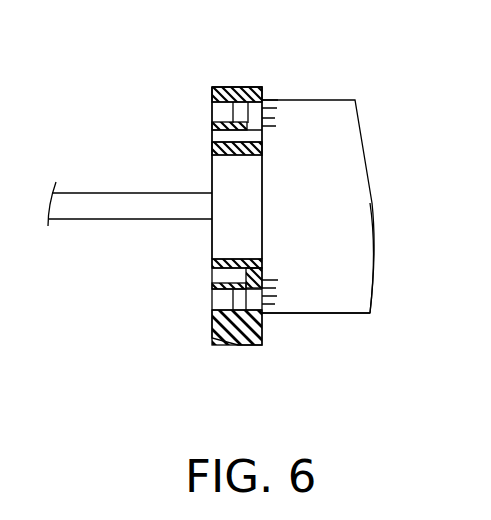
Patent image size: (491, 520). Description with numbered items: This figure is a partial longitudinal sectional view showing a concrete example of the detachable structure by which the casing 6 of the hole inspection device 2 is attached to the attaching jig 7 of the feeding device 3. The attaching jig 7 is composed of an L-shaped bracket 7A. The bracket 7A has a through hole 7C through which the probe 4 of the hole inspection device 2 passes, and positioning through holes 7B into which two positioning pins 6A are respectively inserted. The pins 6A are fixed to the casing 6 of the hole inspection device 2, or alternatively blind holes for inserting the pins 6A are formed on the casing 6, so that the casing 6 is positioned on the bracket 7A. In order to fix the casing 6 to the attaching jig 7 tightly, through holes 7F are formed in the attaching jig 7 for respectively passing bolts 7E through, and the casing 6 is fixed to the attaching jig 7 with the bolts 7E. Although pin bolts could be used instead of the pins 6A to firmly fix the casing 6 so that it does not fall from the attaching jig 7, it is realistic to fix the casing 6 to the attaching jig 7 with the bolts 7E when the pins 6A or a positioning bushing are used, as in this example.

The hole inspection device 2 is at (331, 101).
The feeding device 3 is at (239, 89).
The probe 4 is at (103, 206).
The casing 6 is at (349, 300).
The positioning pins 6A is at (212, 140).
The attaching jig 7 is at (262, 328).
The L-shaped bracket 7A is at (212, 94).
The positioning through holes 7B is at (212, 276).
The through hole 7C is at (212, 236).
The bolts 7E is at (212, 119).
The through holes 7F is at (212, 306).